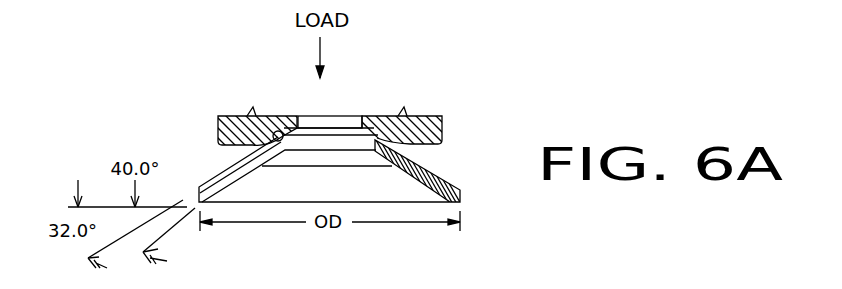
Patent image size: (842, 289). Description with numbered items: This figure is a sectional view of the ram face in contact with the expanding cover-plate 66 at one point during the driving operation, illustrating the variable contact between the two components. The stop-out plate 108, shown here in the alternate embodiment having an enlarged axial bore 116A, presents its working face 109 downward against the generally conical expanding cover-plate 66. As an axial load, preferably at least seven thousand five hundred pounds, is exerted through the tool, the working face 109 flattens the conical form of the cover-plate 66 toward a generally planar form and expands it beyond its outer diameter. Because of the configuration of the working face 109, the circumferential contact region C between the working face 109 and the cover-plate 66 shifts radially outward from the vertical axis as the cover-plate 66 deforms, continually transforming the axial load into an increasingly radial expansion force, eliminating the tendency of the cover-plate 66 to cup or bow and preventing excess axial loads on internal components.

The stop-out plate 108 is at (218, 118).
The working face 109 is at (236, 149).
The enlarged axial bore 116A is at (330, 122).
The circumferential contact region C is at (279, 131).
The expanding cover-plate 66 is at (447, 180).